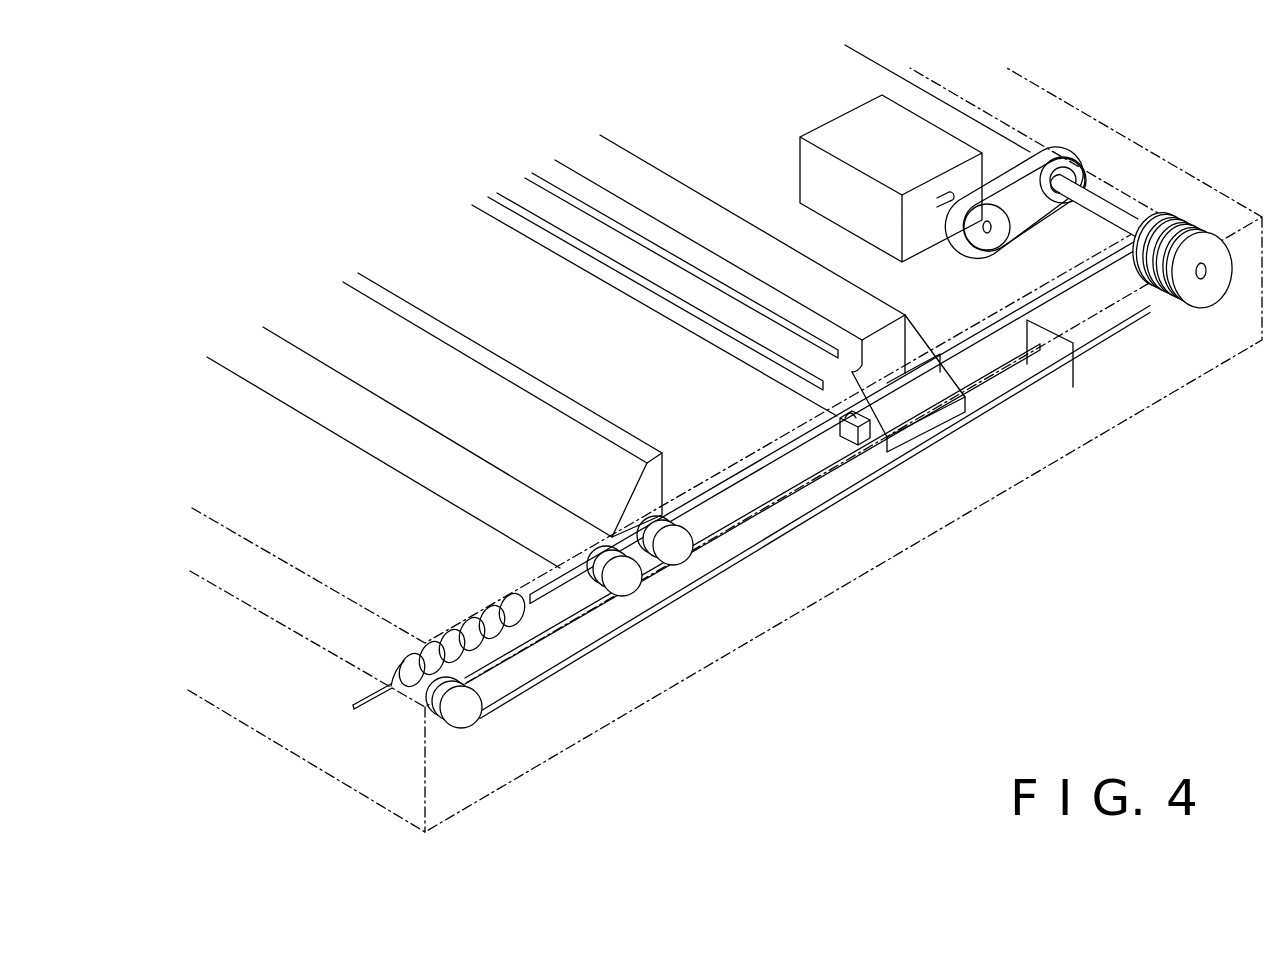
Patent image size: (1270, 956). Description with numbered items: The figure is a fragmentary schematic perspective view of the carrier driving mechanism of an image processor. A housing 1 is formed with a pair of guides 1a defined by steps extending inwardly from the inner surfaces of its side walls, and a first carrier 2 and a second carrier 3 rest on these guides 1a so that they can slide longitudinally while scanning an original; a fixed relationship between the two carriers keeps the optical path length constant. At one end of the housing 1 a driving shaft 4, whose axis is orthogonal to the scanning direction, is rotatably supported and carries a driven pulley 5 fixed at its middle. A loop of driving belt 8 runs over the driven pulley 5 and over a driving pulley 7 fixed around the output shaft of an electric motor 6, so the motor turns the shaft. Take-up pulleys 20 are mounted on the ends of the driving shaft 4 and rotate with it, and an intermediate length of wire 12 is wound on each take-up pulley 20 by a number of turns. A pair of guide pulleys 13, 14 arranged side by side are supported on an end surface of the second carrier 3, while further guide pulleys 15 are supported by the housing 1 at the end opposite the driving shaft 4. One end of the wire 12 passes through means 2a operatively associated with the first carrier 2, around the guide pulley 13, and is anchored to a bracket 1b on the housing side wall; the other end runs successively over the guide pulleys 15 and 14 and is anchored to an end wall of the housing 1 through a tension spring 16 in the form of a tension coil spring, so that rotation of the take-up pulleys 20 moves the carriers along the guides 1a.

The housing 1 is at (917, 522).
The guides 1a is at (757, 447).
The brackets 1b is at (1052, 356).
The first carrier 2 is at (692, 200).
The means operatively associated with the first carrier 2a is at (848, 432).
The second carrier 3 is at (488, 356).
The driving shaft 4 is at (1097, 207).
The driven pulley 5 is at (1064, 176).
The electric motor 6 is at (850, 130).
The driving pulley 7 is at (987, 240).
The driving belt 8 is at (1003, 183).
The wire 12 is at (1046, 296).
The guide pulley 13 is at (673, 550).
The guide pulley 14 is at (618, 578).
The guide pulleys 15 is at (463, 718).
The tension spring 16 is at (412, 668).
The take-up pulleys 20 is at (1220, 234).